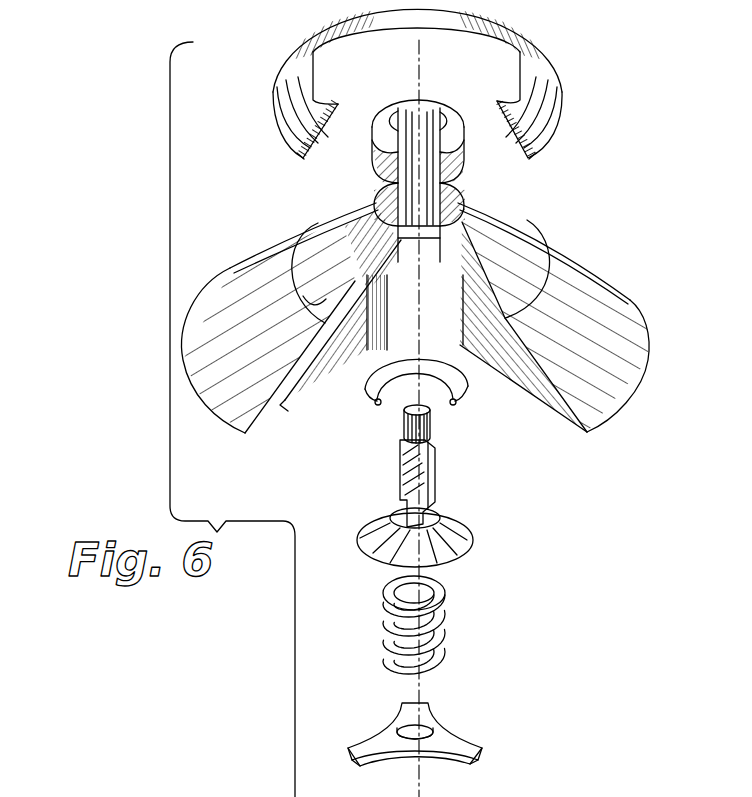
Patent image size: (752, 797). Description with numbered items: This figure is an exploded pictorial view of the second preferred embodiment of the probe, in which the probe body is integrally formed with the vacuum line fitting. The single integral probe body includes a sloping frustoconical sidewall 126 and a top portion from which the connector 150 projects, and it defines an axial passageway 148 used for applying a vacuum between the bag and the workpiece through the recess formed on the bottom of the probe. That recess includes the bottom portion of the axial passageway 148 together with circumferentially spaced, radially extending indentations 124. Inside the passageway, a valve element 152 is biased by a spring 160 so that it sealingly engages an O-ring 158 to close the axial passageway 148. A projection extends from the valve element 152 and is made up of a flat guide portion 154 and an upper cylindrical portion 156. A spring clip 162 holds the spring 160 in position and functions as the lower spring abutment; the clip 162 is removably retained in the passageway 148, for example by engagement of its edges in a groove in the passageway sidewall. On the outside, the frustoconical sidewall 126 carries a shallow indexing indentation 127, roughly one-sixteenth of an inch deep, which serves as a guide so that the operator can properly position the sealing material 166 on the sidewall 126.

The sealing material 166 is at (558, 58).
The axial passageway 148 is at (437, 114).
The connector 150 is at (371, 160).
The frustoconical sidewall 126 is at (512, 231).
The indexing indentation 127 is at (304, 317).
The radially extending indentations 124 is at (546, 399).
The O-ring 158 is at (355, 401).
The upper cylindrical portion 156 is at (402, 424).
The flat guide portion 154 is at (410, 473).
The valve element 152 is at (452, 498).
The spring 160 is at (462, 606).
The spring clip 162 is at (470, 733).